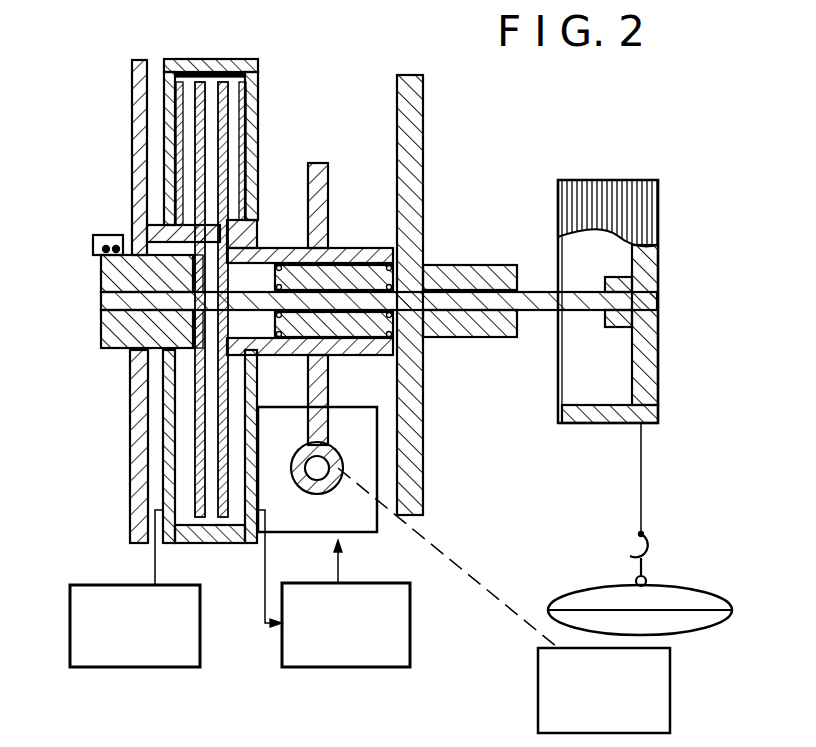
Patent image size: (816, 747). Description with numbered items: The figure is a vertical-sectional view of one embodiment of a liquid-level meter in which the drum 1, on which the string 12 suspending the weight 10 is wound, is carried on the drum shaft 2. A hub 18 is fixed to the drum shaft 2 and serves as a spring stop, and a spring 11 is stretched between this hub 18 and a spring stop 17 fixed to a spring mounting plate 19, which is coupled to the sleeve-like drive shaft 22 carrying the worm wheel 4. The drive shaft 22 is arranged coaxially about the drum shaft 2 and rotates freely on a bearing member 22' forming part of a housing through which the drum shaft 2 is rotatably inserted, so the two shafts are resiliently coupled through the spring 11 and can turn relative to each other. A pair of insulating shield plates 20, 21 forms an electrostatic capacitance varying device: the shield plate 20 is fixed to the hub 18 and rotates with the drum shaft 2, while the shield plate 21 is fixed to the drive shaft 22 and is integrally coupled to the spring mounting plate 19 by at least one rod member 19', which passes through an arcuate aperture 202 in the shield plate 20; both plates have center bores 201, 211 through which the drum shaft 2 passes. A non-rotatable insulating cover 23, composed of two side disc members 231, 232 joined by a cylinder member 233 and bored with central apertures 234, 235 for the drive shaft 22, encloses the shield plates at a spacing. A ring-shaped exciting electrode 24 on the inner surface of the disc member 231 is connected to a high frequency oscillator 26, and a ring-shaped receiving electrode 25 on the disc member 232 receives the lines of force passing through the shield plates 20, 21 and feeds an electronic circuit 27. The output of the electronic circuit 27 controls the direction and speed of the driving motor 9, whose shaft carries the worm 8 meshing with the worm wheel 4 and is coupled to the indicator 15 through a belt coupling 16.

The drum 1 is at (658, 344).
The drum shaft 2 is at (540, 310).
The worm wheel 4 is at (328, 190).
The worm 8 is at (332, 470).
The driving motor 9 is at (318, 532).
The weight 10 is at (596, 590).
The spring 11 is at (147, 240).
The string 12 is at (641, 478).
The indicator 15 is at (670, 698).
The belt coupling 16 is at (470, 586).
The spring stop 17 is at (98, 235).
The hub 18 is at (101, 270).
The spring mounting plate 19 is at (110, 446).
The rod member 19' is at (109, 157).
The shield plate 20 is at (200, 82).
The bore 201 is at (237, 277).
The arcuate aperture 202 is at (245, 224).
The shield plate 21 is at (224, 82).
The bore 211 is at (236, 327).
The drive shaft 22 is at (310, 324).
The bearing member 22' is at (457, 295).
The cover 23 is at (288, 48).
The side disc member 231 is at (180, 100).
The side disc member 232 is at (258, 74).
The cylinder member 233 is at (200, 73).
The aperture 234 is at (163, 370).
The aperture 235 is at (277, 446).
The exciting electrode 24 is at (176, 104).
The receiving electrode 25 is at (246, 114).
The high frequency oscillator 26 is at (200, 648).
The electronic circuit 27 is at (410, 648).